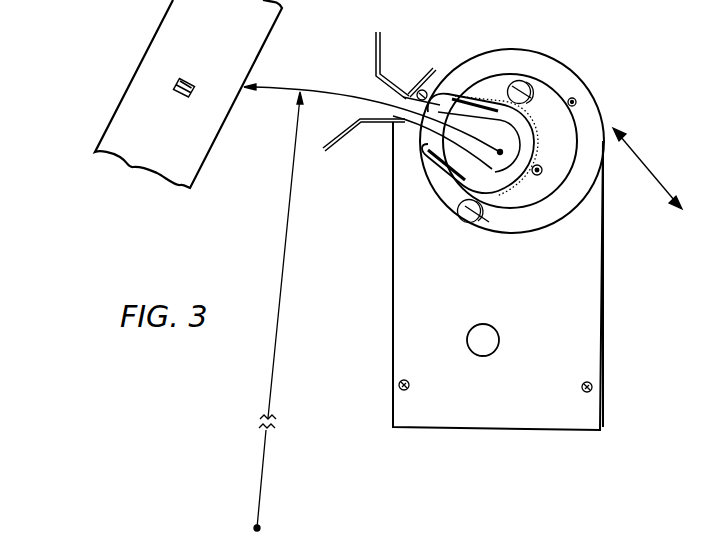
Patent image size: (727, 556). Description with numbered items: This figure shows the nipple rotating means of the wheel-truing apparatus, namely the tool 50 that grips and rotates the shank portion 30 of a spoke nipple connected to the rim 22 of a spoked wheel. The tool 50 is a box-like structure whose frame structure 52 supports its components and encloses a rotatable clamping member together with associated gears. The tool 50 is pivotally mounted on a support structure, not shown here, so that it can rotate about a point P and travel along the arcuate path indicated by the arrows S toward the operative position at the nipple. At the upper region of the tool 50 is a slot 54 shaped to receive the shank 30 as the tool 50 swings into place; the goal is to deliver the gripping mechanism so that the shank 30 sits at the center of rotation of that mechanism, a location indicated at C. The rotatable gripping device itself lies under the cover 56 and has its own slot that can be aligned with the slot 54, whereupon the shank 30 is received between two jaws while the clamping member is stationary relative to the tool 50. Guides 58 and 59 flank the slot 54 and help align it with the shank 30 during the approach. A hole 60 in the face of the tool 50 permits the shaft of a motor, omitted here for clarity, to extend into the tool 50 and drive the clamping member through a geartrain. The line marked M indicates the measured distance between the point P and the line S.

The rim 22 is at (277, 20).
The shank portion 30 is at (187, 78).
The tool 50 is at (531, 293).
The frame structure 52 is at (604, 258).
The slot 54 is at (425, 113).
The cover 56 is at (563, 127).
The guide 58 is at (336, 142).
The guide 59 is at (382, 42).
The hole 60 is at (493, 348).
The arrows S is at (280, 88).
The distance M is at (275, 352).
The point P is at (259, 527).
The center of curvature C is at (485, 158).